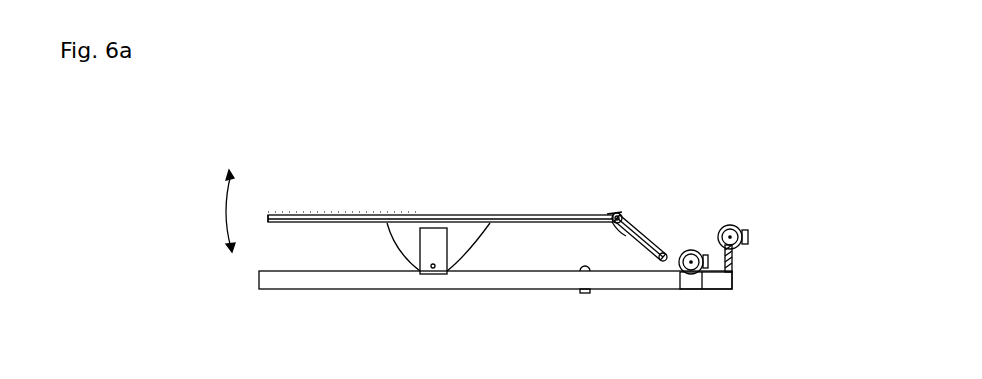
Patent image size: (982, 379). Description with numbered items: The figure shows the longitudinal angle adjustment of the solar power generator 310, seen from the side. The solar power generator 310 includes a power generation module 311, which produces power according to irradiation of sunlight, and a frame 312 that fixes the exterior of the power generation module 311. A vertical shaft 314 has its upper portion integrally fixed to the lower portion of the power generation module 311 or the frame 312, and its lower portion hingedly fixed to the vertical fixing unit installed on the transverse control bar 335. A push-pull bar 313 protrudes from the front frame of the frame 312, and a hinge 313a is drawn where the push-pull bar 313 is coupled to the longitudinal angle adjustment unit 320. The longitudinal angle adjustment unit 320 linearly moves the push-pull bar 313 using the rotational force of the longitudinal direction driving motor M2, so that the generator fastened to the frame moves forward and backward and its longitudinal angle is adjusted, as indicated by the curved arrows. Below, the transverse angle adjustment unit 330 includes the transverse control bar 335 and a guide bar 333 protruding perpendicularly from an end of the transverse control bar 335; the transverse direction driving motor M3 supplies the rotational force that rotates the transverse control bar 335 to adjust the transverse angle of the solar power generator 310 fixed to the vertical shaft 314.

The solar power generator 310 is at (438, 191).
The power generation module 311 is at (523, 213).
The frame 312 is at (283, 214).
The push-pull bar 313 is at (600, 213).
The hinge shaft 313a is at (613, 210).
The vertical shaft 314 is at (396, 246).
The longitudinal angle adjustment unit 320 is at (648, 216).
The transverse angle adjustment unit 330 is at (437, 272).
The guide bar 333 is at (745, 262).
The transverse control bar 335 is at (545, 291).
The longitudinal direction driving motor M2 is at (690, 291).
The transverse direction driving motor M3 is at (734, 226).